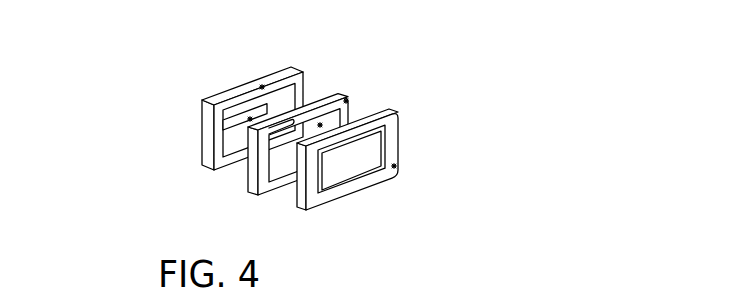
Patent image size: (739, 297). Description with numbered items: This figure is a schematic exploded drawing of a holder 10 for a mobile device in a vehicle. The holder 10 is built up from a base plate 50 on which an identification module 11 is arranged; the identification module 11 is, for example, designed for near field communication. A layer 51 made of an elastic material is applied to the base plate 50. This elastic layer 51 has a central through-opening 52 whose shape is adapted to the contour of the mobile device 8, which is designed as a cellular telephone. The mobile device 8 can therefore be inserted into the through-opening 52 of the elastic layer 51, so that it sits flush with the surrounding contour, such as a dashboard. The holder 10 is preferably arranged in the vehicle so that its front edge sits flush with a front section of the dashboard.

The holder 10 is at (284, 113).
The base plate 50 is at (261, 86).
The identification module 11 is at (248, 120).
The central through-opening 52 is at (320, 123).
The layer 51 is at (347, 100).
The mobile device 8 is at (396, 165).